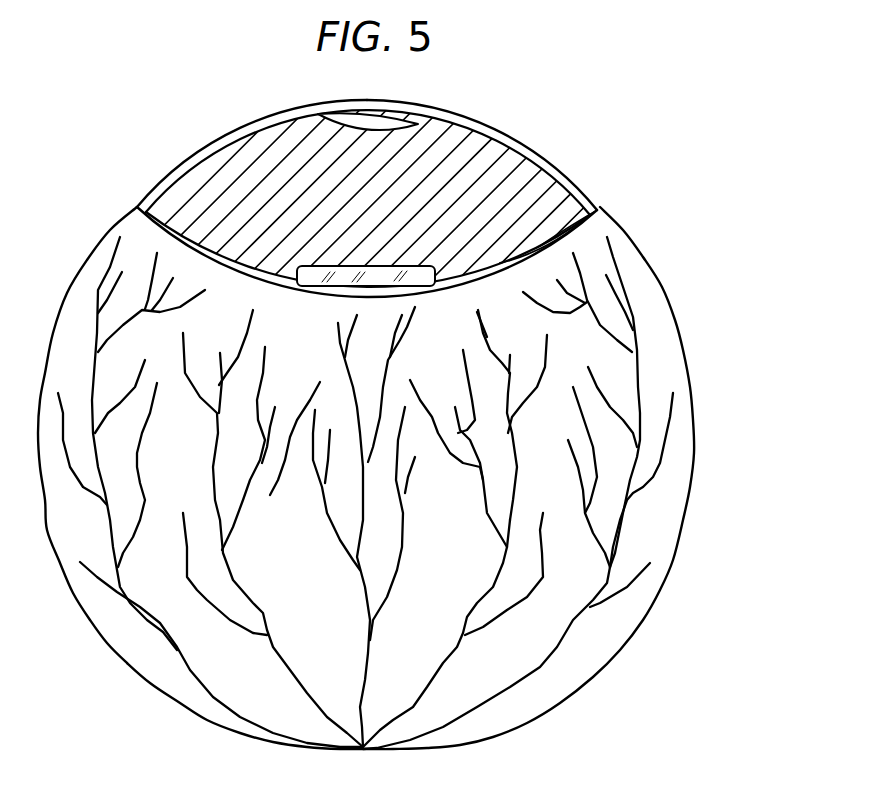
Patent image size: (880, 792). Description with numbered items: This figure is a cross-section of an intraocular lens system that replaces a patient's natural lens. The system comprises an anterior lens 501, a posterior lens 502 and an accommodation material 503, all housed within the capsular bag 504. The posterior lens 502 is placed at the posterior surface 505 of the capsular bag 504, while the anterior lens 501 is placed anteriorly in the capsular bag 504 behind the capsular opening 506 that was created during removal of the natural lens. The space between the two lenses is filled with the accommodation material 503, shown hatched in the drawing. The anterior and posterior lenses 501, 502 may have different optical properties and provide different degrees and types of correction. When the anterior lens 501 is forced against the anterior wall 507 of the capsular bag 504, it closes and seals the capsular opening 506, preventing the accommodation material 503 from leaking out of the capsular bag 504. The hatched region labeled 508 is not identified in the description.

The anterior lens 501 is at (377, 104).
The posterior lens 502 is at (440, 283).
The accommodation material 503 is at (493, 175).
The capsular bag 504 is at (230, 137).
The posterior surface 505 is at (590, 208).
The capsular opening 506 is at (307, 118).
The anterior wall 507 is at (477, 132).
The lens nucleus 508 is at (263, 210).